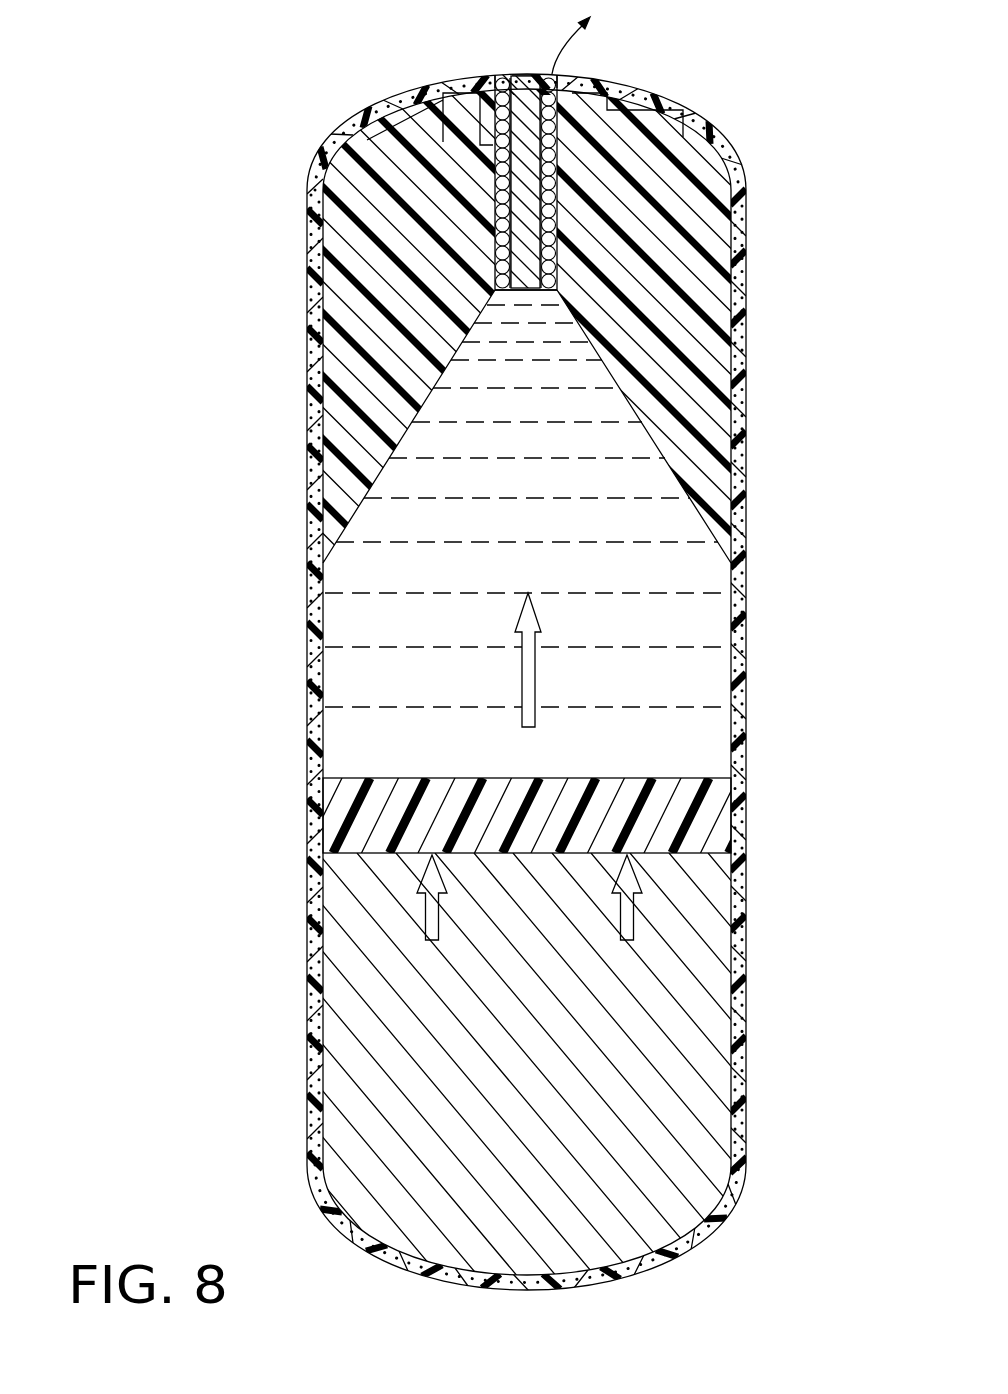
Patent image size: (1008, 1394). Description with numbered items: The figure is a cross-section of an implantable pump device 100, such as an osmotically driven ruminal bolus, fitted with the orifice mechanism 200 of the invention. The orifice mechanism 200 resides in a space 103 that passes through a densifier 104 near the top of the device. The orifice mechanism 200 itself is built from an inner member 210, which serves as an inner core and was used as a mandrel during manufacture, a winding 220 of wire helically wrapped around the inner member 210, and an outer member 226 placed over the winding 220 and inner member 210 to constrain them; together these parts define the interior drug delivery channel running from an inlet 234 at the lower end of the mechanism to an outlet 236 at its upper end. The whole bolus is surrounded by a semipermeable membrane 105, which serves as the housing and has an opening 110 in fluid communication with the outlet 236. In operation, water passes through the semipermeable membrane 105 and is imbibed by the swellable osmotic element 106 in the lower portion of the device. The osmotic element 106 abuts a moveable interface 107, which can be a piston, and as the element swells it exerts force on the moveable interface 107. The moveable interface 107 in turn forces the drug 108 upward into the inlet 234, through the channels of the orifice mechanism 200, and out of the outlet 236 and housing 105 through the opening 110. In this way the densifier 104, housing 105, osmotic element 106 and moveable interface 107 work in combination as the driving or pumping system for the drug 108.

The implantable pump device 100 is at (231, 944).
The space 103 is at (497, 205).
The densifier 104 is at (722, 320).
The semipermeable membrane 105 is at (746, 488).
The swellable osmotic element 106 is at (393, 1220).
The moveable interface 107 is at (706, 838).
The drug 108 is at (565, 55).
The opening 110 is at (497, 74).
The orifice mechanism 200 is at (558, 217).
The inner member 210 is at (522, 162).
The winding 220 is at (567, 98).
The outer member 226 is at (563, 153).
The inlet 234 is at (500, 291).
The outlet 236 is at (547, 74).